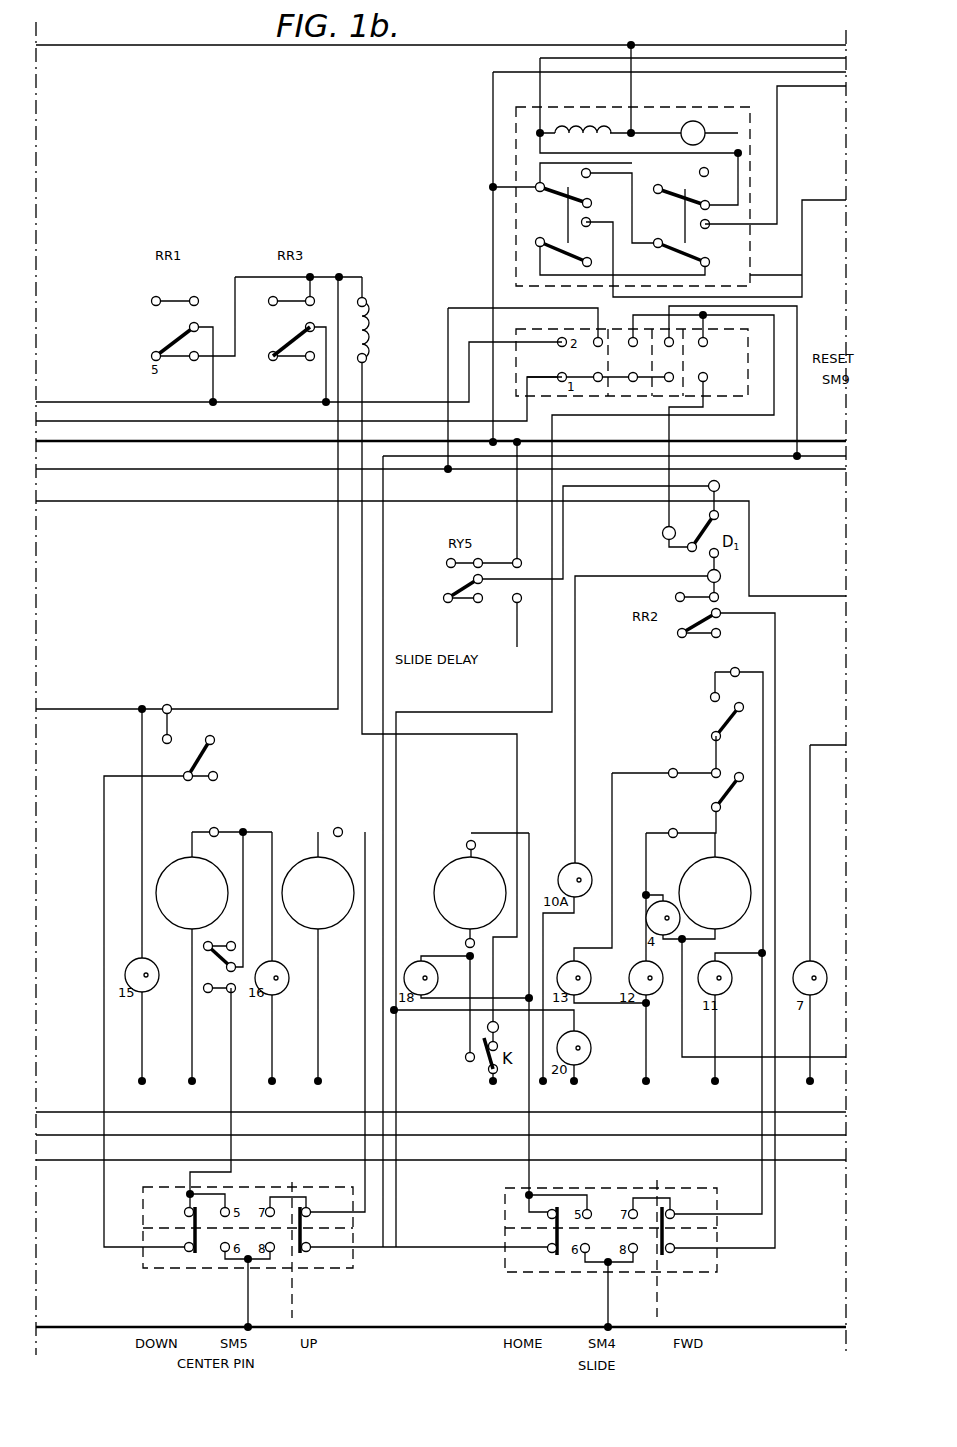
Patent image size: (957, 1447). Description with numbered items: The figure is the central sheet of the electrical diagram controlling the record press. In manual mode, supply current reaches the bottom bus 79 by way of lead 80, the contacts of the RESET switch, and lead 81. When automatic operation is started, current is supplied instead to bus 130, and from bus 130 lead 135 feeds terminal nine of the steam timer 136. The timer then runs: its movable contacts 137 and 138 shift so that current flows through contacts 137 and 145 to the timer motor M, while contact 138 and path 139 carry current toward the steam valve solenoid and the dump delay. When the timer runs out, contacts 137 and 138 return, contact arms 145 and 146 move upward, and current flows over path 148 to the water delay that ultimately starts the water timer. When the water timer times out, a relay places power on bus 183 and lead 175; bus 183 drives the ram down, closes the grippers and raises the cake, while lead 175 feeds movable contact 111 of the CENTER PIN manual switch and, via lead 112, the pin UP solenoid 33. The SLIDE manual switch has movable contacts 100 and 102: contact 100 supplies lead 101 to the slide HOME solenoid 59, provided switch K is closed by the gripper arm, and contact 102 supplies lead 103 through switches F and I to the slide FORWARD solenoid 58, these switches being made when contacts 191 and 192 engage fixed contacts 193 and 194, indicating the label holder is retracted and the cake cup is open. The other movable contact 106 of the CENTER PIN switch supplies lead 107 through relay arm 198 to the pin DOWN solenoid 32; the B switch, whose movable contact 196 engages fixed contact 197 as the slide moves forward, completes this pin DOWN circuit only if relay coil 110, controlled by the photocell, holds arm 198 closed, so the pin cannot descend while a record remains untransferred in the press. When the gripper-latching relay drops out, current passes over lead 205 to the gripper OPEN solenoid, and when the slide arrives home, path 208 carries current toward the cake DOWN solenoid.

The lead 135 is at (718, 72).
The steam timer 136 is at (516, 143).
The movable contact 137 is at (579, 199).
The movable contact 138 is at (553, 249).
The path 139 is at (802, 278).
The contact arm 145 is at (681, 196).
The contact arm 146 is at (700, 255).
The path 148 is at (777, 162).
The relay coil 110 is at (363, 337).
The arm of relay RR1 198 is at (176, 341).
The lead 81 is at (230, 402).
The lead 80 is at (275, 421).
The bus 130 is at (292, 443).
The bus 183 is at (250, 470).
The lead 205 is at (150, 501).
The lead 175 is at (768, 458).
The fixed contact of B switch 197 is at (161, 741).
The movable contact of B switch 196 is at (204, 758).
The fixed contact of F switch 193 is at (712, 697).
The contact of F switch 191 is at (727, 723).
The fixed contact of I switch 194 is at (716, 762).
The contact of I switch 192 is at (726, 792).
The slide FORWARD valve solenoid 58 is at (712, 857).
The slide HOME valve solenoid 59 is at (451, 920).
The pin DOWN valve solenoid 32 is at (186, 928).
The pin UP valve solenoid 33 is at (322, 930).
The lead 112 is at (365, 1058).
The lead 107 is at (232, 1102).
The path 208 is at (262, 1160).
The lead 101 is at (529, 1153).
The lead 103 is at (762, 1195).
The movable contact of SM5 106 is at (193, 1235).
The movable contact of SM5 111 is at (302, 1235).
The movable contact of SM4 100 is at (557, 1236).
The movable contact of SM4 102 is at (664, 1236).
The bus 79 is at (392, 1328).